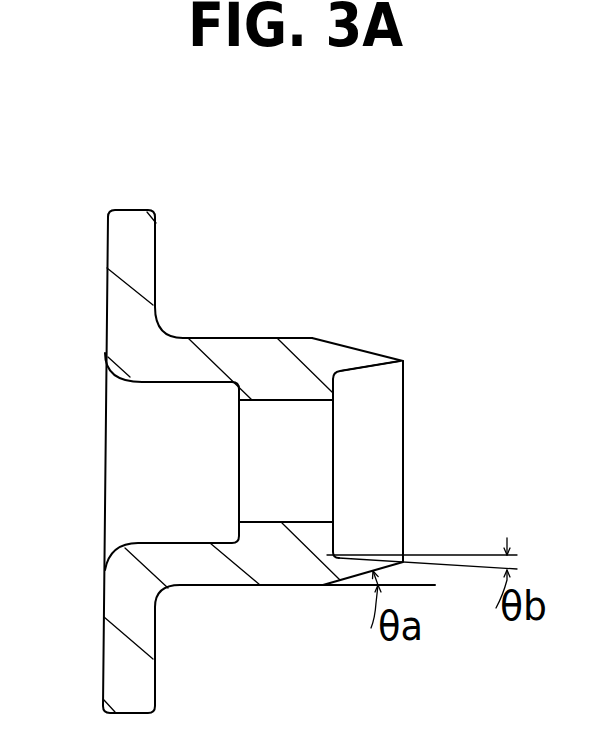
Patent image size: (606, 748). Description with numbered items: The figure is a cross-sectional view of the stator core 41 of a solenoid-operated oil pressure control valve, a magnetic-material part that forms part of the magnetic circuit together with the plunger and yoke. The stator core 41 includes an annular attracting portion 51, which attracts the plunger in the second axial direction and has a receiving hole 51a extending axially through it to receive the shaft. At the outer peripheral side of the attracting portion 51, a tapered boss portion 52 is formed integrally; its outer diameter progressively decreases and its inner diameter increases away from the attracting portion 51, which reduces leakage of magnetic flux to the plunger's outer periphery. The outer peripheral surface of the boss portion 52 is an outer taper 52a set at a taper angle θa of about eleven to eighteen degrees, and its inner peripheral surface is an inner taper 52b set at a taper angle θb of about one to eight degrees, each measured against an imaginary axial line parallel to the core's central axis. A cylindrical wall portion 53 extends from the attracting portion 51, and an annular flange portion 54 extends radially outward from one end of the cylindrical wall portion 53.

The stator core 41 is at (87, 203).
The annular flange portion 54 is at (147, 238).
The cylindrical wall portion 53 is at (227, 353).
The tapered boss portion 52 is at (357, 358).
The outer taper 52a is at (374, 353).
The inner taper 52b is at (377, 365).
The annular attracting portion 51 is at (337, 397).
The receiving hole 51a is at (300, 520).